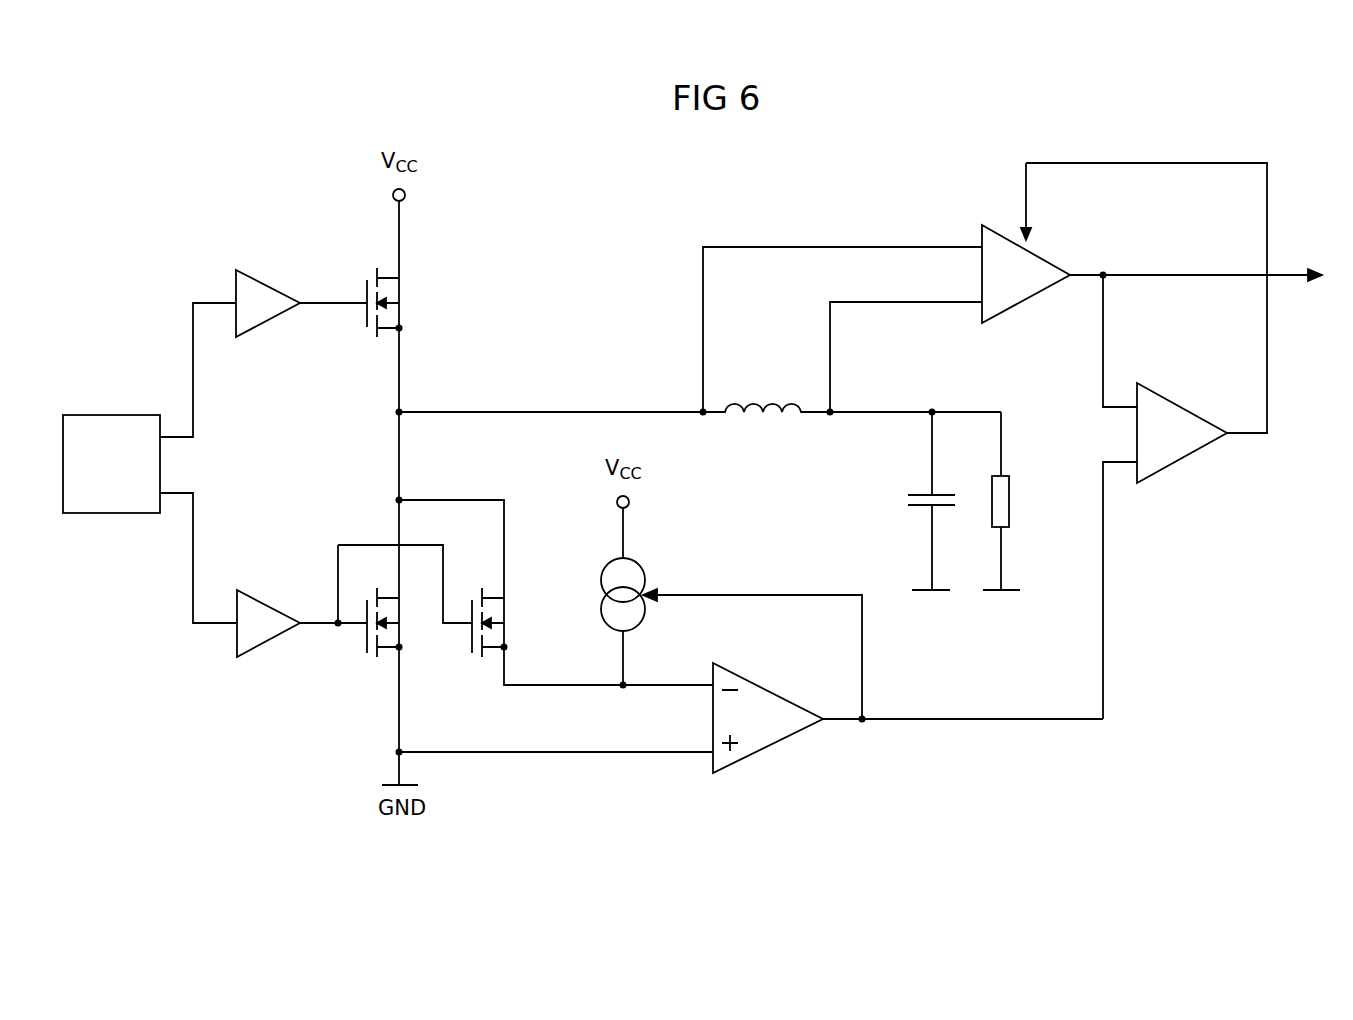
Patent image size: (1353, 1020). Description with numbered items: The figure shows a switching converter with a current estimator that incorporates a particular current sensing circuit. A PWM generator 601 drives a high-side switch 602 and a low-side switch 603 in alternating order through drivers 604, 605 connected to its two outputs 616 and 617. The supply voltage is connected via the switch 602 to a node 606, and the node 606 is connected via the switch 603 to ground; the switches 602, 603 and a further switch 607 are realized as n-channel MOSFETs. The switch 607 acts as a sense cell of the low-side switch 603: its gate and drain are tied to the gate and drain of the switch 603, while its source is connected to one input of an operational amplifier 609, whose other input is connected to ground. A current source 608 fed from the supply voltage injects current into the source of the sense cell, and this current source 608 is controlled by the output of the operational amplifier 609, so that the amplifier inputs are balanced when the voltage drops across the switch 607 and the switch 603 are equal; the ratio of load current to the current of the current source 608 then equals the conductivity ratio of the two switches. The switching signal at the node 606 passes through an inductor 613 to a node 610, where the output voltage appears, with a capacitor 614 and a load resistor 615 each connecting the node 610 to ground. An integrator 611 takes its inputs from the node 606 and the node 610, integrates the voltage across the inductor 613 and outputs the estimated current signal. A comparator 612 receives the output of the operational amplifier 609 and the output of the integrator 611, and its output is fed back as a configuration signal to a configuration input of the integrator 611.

The PWM generator 601 is at (101, 414).
The switch 602 is at (396, 292).
The switch 603 is at (358, 652).
The driver 604 is at (262, 283).
The driver 605 is at (262, 603).
The node 606 is at (398, 412).
The switch 607 is at (497, 612).
The current source 608 is at (637, 560).
The operational amplifier 609 is at (762, 750).
The node 610 is at (829, 420).
The integrator 611 is at (995, 228).
The comparator 612 is at (1178, 463).
The inductor 613 is at (753, 400).
The capacitor 614 is at (920, 508).
The resistor 615 is at (1010, 500).
The output 616 is at (160, 435).
The output 617 is at (160, 495).